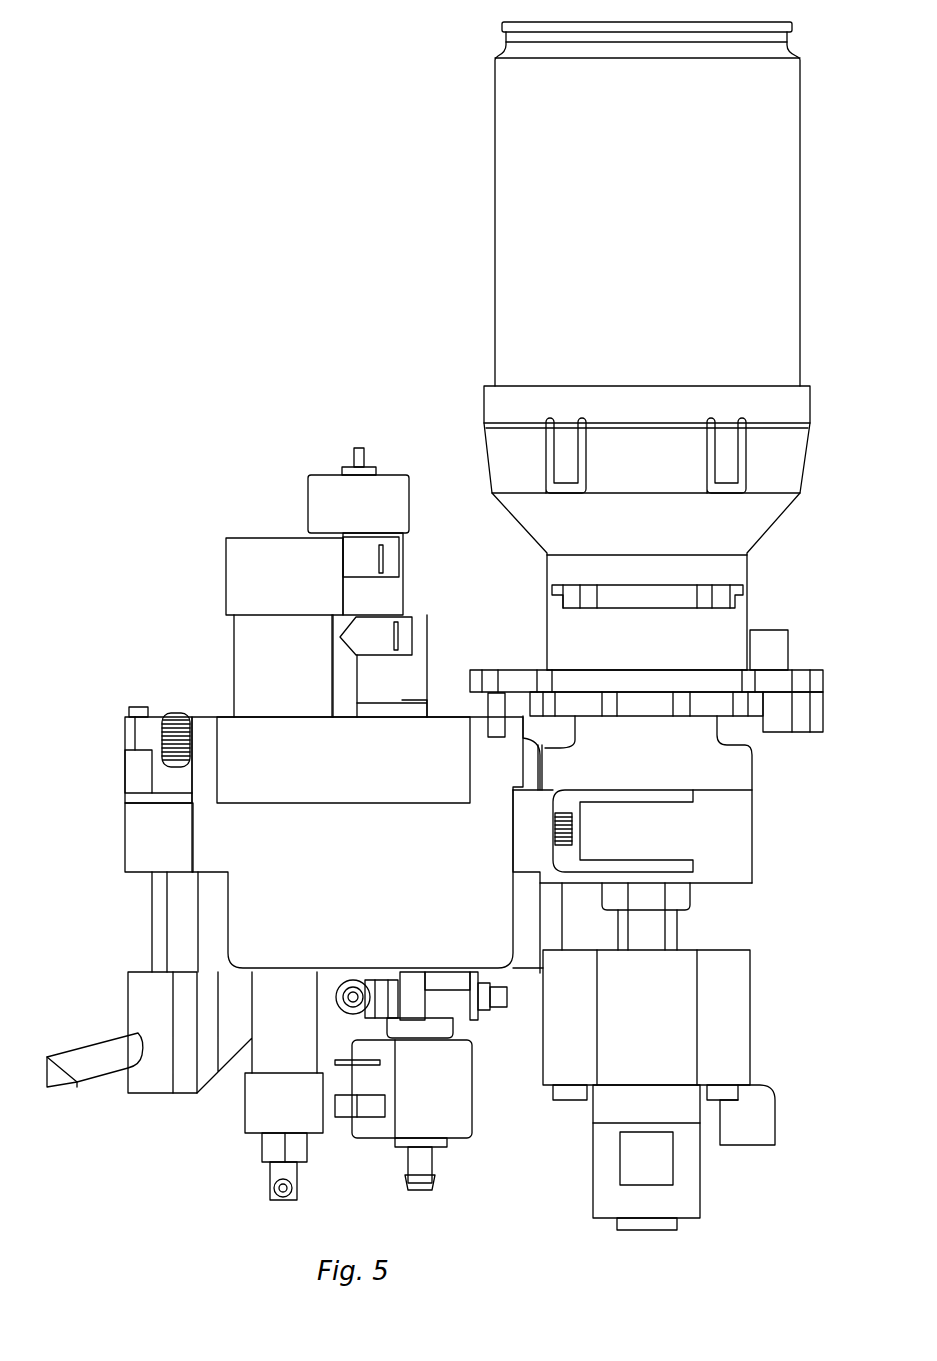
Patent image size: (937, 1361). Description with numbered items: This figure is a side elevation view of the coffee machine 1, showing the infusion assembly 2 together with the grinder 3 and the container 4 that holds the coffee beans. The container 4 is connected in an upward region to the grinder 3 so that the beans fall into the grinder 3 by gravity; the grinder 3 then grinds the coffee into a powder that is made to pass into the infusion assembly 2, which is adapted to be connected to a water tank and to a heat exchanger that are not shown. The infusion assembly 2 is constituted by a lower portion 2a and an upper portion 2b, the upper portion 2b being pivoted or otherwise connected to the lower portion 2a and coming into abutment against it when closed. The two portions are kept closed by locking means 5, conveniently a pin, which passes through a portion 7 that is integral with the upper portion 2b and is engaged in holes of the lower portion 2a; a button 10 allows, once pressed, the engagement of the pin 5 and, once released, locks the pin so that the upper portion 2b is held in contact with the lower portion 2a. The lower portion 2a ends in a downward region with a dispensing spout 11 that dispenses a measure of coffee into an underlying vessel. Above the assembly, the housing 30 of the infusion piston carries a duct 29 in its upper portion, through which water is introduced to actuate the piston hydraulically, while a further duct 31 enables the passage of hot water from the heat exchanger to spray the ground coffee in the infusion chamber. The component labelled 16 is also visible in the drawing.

The machine 1 is at (96, 586).
The infusion assembly 2 is at (100, 818).
The lower portion 2a is at (128, 855).
The upper portion 2b is at (165, 783).
The grinder 3 is at (577, 680).
The container 4 is at (527, 205).
The locking means 5 is at (175, 723).
The portion 7 is at (340, 770).
The button 10 is at (497, 708).
The dispensing spout 11 is at (100, 1065).
The control unit 16 is at (335, 487).
The duct 29 is at (388, 557).
The housing 30 is at (273, 565).
The further duct 31 is at (407, 635).